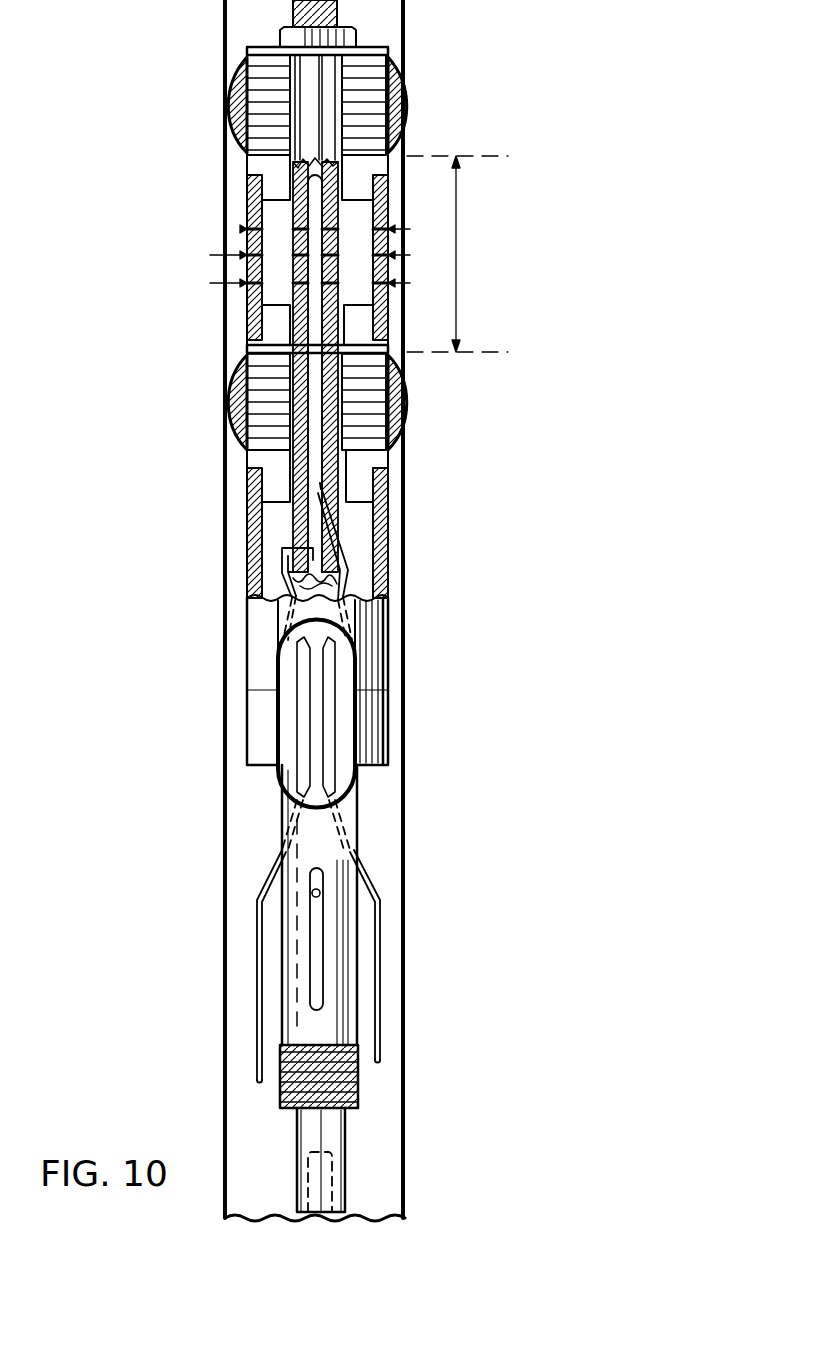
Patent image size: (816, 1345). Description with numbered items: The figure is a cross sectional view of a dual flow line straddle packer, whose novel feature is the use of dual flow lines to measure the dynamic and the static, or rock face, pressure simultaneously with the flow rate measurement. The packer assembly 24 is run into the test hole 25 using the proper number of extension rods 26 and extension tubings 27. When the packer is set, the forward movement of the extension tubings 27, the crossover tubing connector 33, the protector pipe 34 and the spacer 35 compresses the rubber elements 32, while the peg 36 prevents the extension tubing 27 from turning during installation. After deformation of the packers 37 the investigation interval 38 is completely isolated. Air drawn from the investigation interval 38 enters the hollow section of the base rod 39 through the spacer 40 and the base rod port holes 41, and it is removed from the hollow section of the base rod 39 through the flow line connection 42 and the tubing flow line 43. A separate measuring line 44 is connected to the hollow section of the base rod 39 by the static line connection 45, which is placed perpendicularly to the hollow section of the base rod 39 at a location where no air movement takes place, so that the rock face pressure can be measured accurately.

The packer assembly 24 is at (246, 347).
The test hole 25 is at (224, 568).
The extension rod 26 is at (347, 1135).
The extension tubing 27 is at (359, 1023).
The rubber element 32 is at (368, 67).
The crossover tubing connector 33 is at (390, 720).
The protector pipe 34 is at (388, 528).
The spacer 35 is at (240, 238).
The peg 36 is at (320, 893).
The packer 37 is at (230, 130).
The investigation interval 38 is at (457, 254).
The base rod 39 is at (315, 200).
The spacer 40 is at (410, 223).
The base rod port hole 41 is at (338, 283).
The flow line connection 42 is at (320, 497).
The tubing flow line 43 is at (381, 972).
The measuring line 44 is at (256, 975).
The static line connection 45 is at (282, 549).